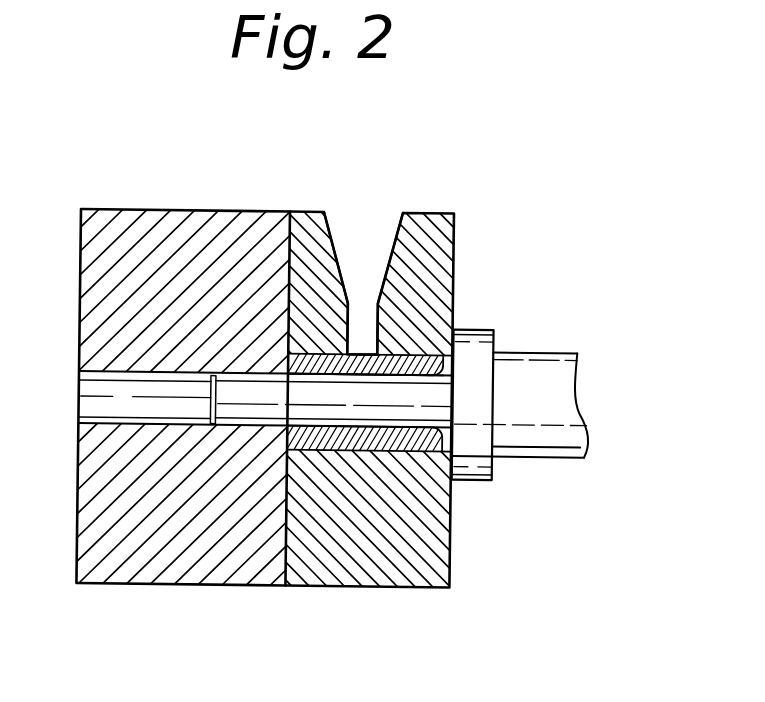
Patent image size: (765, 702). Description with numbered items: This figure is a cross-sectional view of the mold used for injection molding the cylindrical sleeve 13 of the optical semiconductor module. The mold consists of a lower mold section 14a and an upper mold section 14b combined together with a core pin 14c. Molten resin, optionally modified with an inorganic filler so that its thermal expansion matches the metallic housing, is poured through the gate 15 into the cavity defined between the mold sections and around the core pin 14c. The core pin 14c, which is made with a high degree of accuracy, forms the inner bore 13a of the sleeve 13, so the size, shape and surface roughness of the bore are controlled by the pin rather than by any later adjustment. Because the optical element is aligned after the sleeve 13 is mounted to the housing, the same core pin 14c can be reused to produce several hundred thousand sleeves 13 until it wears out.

The sleeve 13 is at (384, 449).
The inner bore 13a is at (411, 384).
The lower mold section 14a is at (127, 587).
The upper mold section 14b is at (370, 587).
The core pin 14c is at (548, 352).
The gate 15 is at (383, 227).